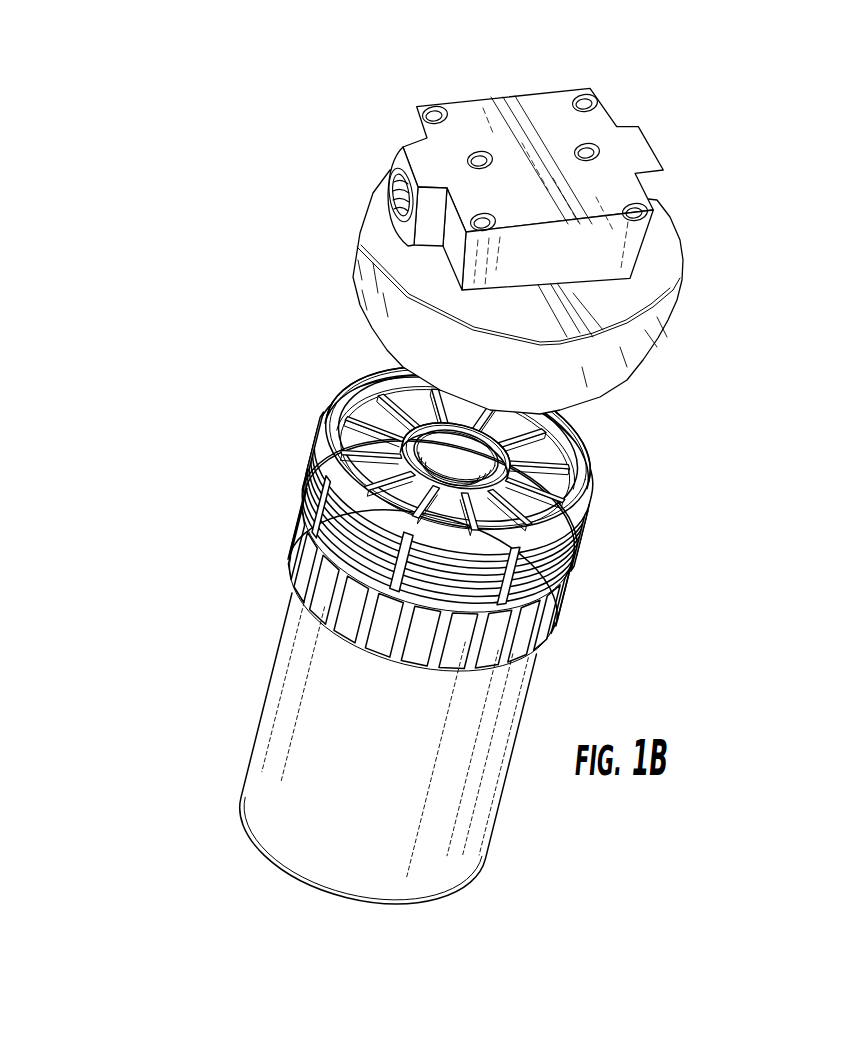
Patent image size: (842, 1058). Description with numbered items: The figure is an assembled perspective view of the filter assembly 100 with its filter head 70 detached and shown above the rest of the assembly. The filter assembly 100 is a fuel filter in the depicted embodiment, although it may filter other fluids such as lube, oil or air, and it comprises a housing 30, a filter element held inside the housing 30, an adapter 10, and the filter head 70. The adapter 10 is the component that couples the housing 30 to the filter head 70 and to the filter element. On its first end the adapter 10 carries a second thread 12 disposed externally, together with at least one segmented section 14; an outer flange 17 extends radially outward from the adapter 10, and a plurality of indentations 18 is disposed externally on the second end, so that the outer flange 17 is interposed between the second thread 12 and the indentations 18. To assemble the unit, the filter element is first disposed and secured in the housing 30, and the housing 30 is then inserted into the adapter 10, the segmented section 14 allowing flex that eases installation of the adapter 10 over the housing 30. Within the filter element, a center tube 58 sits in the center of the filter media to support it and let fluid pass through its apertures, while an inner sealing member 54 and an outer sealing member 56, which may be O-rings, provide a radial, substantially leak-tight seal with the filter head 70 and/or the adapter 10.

The adapter 10 is at (442, 519).
The second thread 12 is at (447, 490).
The segmented section 14 is at (422, 591).
The outer flange 17 is at (440, 522).
The indentations 18 is at (431, 556).
The housing 30 is at (242, 723).
The inner sealing member 54 is at (456, 455).
The outer sealing member 56 is at (457, 448).
The center tube 58 is at (454, 462).
The filter head 70 is at (345, 178).
The filter assembly 100 is at (748, 280).